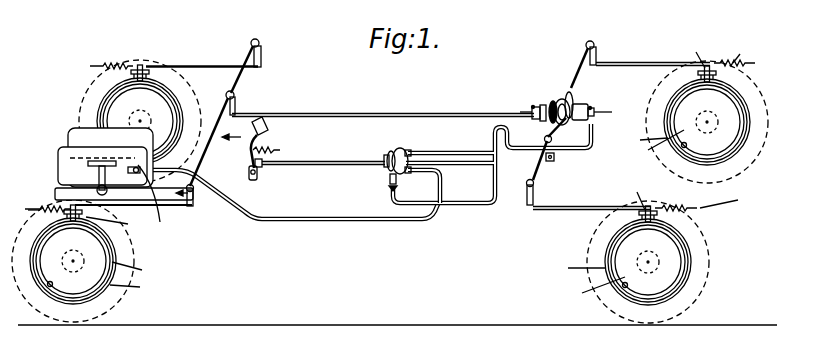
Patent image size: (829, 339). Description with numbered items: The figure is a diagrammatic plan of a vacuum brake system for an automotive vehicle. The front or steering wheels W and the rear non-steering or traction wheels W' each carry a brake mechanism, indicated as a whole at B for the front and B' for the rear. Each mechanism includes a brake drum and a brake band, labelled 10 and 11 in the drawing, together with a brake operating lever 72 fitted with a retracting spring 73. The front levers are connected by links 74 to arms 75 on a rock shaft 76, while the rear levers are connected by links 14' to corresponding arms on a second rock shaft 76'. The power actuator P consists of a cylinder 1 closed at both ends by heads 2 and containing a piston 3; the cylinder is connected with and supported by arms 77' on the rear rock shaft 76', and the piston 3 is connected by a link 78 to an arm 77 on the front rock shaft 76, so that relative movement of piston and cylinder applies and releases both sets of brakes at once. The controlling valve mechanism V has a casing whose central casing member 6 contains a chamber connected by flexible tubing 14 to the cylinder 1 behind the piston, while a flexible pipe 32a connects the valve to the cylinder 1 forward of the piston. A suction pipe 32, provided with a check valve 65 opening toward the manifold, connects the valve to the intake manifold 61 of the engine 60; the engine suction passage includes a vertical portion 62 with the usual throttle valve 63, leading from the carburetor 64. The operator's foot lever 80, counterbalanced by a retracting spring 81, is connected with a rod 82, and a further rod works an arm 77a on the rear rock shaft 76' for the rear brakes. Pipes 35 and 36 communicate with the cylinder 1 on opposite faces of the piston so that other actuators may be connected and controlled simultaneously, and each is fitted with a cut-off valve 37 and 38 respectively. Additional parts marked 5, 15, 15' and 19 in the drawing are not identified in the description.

The cylinder 1 is at (578, 108).
The heads 2 is at (552, 102).
The piston 3 is at (572, 124).
The cylinder fitting 5 is at (535, 119).
The central casing member 6 is at (397, 148).
The wheel 10 is at (110, 111).
The annular diaphragm engaging seat 11 is at (104, 99).
The flexible tubing 14 is at (204, 229).
The links 14' is at (621, 125).
The lever 15 is at (211, 211).
The lever 15' is at (580, 123).
The conduit 19 is at (484, 165).
The suction pipe 32 is at (445, 189).
The flexible pipe 32a is at (412, 152).
The pipe 35 is at (532, 110).
The pipe 36 is at (597, 112).
The cut off valve 37 is at (533, 106).
The cut off valve 38 is at (592, 108).
The engine 60 is at (74, 133).
The intake manifold 61 is at (72, 157).
The vertical portion 62 is at (94, 172).
The throttle valve 63 is at (98, 183).
The carburetor 64 is at (55, 192).
The check valve 65 is at (160, 201).
The brake operating lever 72 is at (146, 72).
The retracting spring 73 is at (109, 64).
The links 74 is at (192, 65).
The arms 75 is at (262, 50).
The rock shaft 76 is at (235, 116).
The rock shaft 76' is at (597, 78).
The arm 77 is at (254, 101).
The arms 77' is at (559, 114).
The arm 77a is at (556, 159).
The link 78 is at (458, 113).
The foot lever 80 is at (249, 148).
The retracting spring 81 is at (270, 148).
The rod 82 is at (352, 161).
The brake mechanisms B is at (113, 150).
The brake mechanisms B' is at (635, 147).
The front or steering wheels W is at (98, 195).
The non-steering or traction wheels W' is at (736, 236).
The power actuator P is at (603, 122).
The controlling valve mechanism V is at (389, 186).